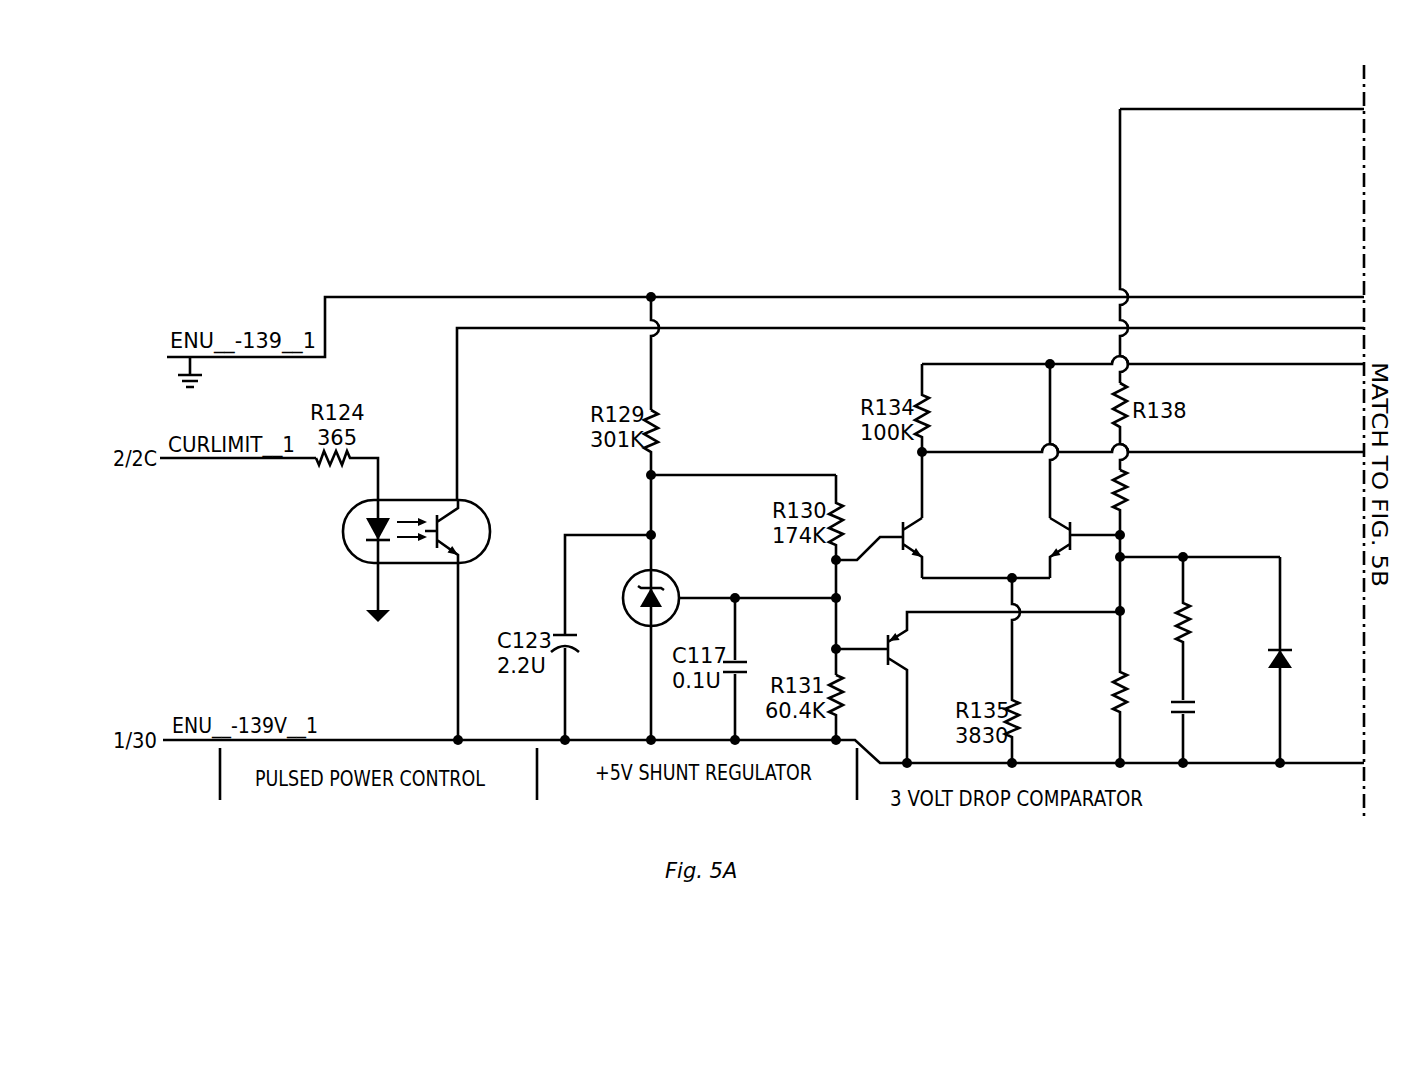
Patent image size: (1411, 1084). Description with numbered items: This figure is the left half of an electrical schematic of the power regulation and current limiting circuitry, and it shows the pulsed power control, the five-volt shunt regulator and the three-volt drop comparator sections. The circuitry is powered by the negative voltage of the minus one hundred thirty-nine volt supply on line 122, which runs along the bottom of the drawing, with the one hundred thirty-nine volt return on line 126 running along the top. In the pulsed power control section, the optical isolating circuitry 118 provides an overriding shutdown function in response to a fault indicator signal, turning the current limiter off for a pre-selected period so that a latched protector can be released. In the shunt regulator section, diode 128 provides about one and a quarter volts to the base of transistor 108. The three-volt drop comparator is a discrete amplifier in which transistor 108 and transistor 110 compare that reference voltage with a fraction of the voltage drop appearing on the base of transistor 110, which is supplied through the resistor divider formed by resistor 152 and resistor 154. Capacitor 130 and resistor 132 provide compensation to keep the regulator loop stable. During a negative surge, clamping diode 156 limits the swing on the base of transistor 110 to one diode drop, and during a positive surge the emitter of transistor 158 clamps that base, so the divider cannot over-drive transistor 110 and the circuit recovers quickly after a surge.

The 139 volt return line 126 is at (421, 297).
The optical isolating circuitry 118 is at (410, 498).
The −139 volt supply line 122 is at (383, 740).
The diode 128 is at (638, 620).
The transistor 108 is at (893, 536).
The transistor 110 is at (1056, 532).
The resistor 152 is at (1123, 500).
The resistor 132 is at (1187, 605).
The clamping diode 156 is at (1284, 650).
The transistor 158 is at (877, 657).
The resistor 154 is at (1127, 695).
The capacitor 130 is at (1190, 712).